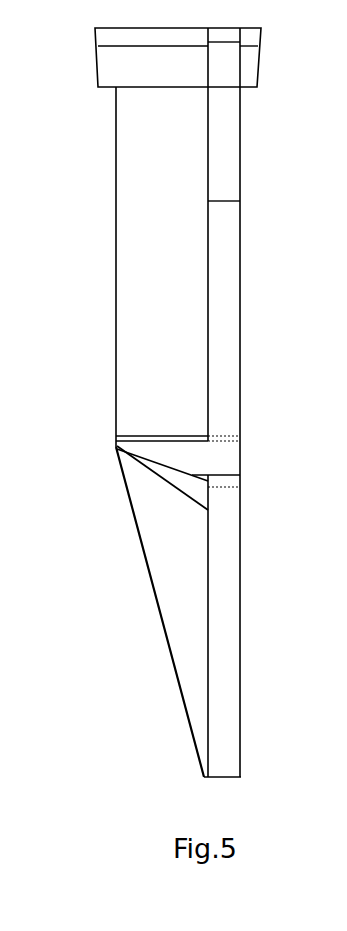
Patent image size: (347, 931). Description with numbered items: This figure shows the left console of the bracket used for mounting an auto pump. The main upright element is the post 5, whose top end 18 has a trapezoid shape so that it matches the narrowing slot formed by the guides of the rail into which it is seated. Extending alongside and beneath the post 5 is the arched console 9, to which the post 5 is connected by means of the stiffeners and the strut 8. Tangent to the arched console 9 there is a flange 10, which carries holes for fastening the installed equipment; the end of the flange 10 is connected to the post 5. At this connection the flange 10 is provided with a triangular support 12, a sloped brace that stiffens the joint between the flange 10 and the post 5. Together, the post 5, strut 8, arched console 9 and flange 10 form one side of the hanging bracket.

The top end 18 is at (145, 68).
The post 5 is at (145, 267).
The arched console 9 is at (261, 234).
The strut 8 is at (252, 609).
The flange 10 is at (129, 612).
The triangular support 12 is at (129, 501).